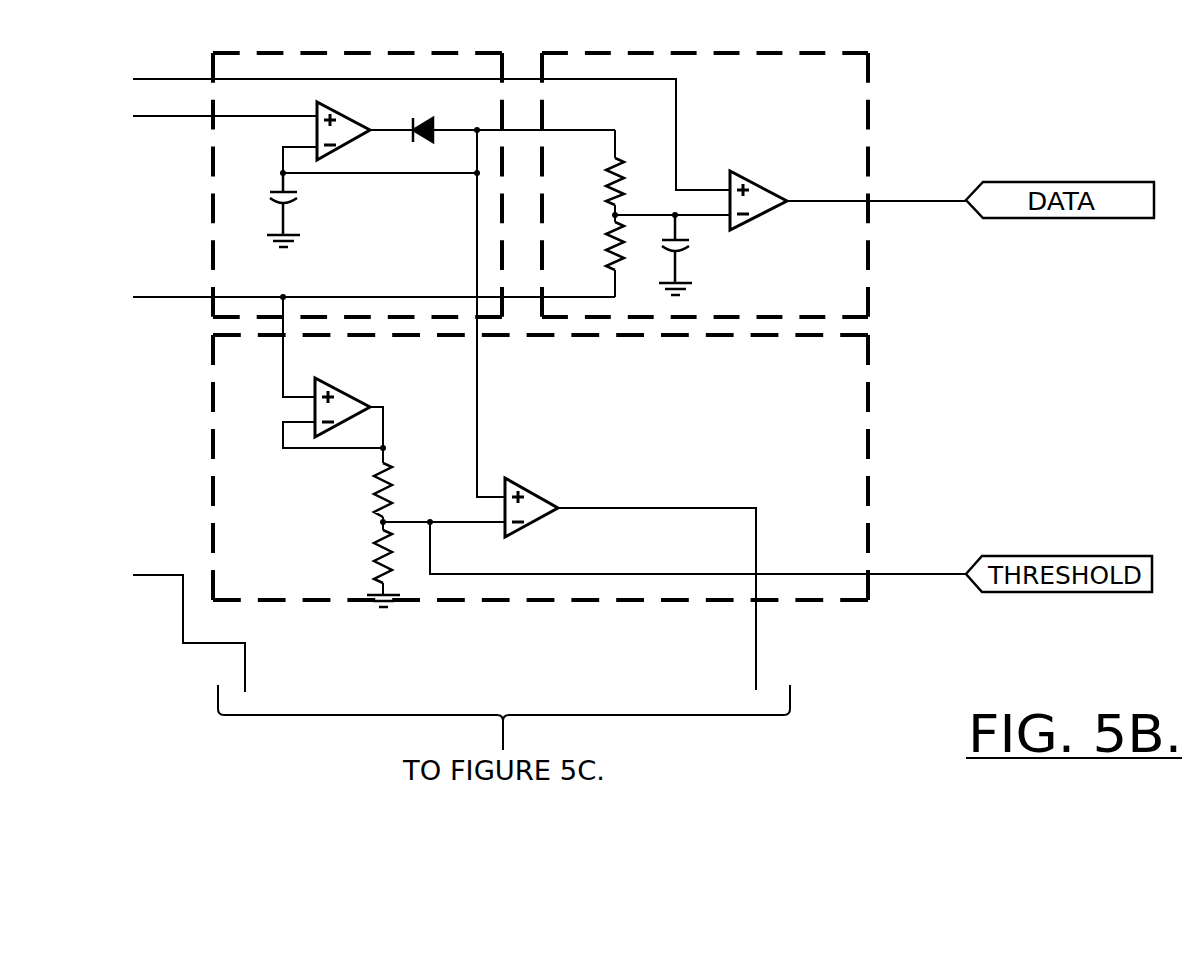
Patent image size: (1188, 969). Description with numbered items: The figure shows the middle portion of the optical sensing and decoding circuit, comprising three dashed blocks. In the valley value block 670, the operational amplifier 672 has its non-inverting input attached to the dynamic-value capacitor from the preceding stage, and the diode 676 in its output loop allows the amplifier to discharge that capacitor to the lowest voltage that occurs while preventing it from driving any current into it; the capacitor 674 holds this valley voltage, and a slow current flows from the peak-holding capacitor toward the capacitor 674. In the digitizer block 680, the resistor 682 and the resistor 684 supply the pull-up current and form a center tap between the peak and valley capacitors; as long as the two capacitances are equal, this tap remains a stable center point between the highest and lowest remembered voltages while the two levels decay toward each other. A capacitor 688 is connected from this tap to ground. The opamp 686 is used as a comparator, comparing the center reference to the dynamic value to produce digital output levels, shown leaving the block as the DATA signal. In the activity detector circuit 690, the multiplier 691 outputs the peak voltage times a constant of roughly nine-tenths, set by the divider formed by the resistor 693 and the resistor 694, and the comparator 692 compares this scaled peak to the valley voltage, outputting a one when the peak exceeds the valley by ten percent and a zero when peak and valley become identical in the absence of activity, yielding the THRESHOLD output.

The valley value block 670 is at (357, 185).
The operational amplifier 672 is at (348, 120).
The capacitor 674 is at (259, 210).
The diode 676 is at (444, 116).
The digitizer block 680 is at (705, 185).
The resistor 682 is at (588, 246).
The resistor 684 is at (588, 181).
The comparator opamp 686 is at (770, 194).
The capacitor 688 is at (699, 255).
The activity detector circuit 690 is at (540, 467).
The multiplier 691 is at (352, 400).
The comparator 692 is at (540, 498).
The resistor 693 is at (357, 490).
The resistor 694 is at (361, 568).